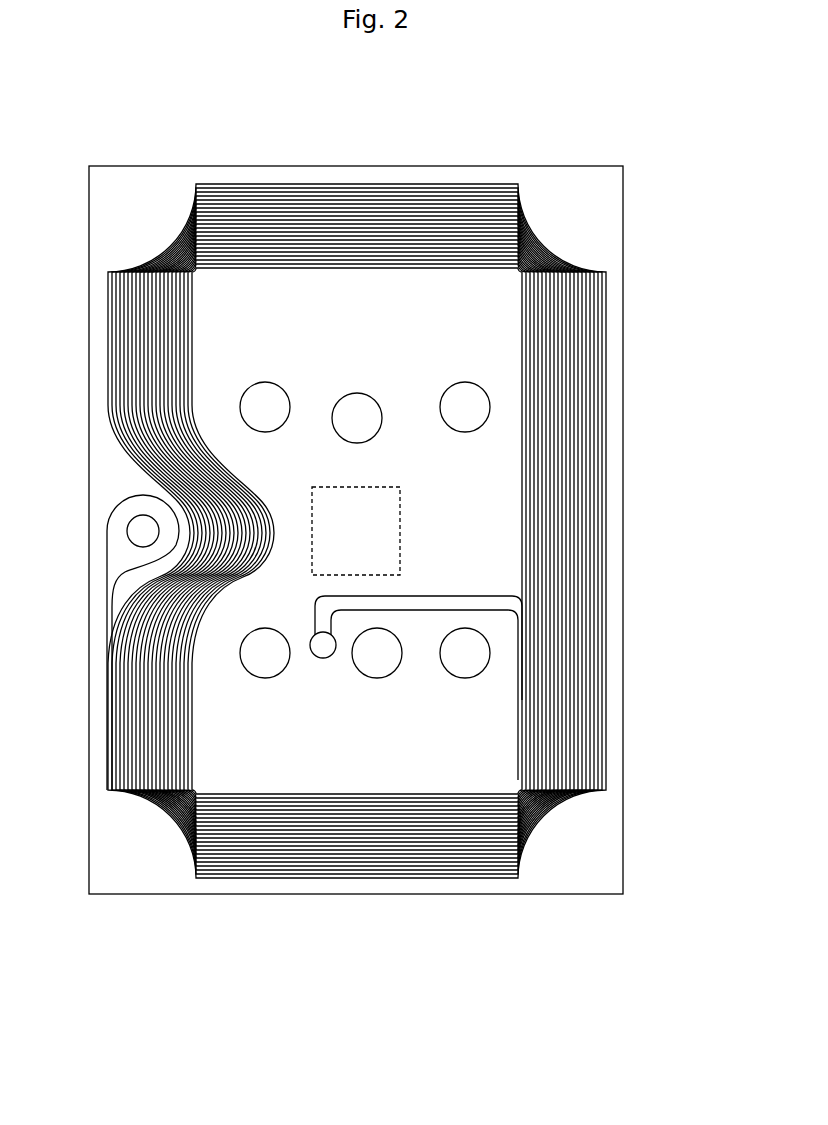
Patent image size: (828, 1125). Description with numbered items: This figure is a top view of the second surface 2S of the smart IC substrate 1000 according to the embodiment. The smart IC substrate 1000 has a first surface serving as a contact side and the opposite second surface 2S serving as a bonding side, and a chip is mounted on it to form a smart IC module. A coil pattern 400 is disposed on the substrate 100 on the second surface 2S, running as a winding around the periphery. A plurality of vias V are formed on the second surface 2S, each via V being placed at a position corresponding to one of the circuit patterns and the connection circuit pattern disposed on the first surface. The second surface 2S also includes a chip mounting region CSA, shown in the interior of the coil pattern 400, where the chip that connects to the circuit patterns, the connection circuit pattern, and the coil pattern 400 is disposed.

The smart IC substrate 1000 is at (128, 65).
The substrate 100 is at (400, 530).
The second surface 2S is at (610, 194).
The coil pattern 400 is at (587, 510).
The chip mounting region CSA is at (377, 553).
The via V is at (356, 393).